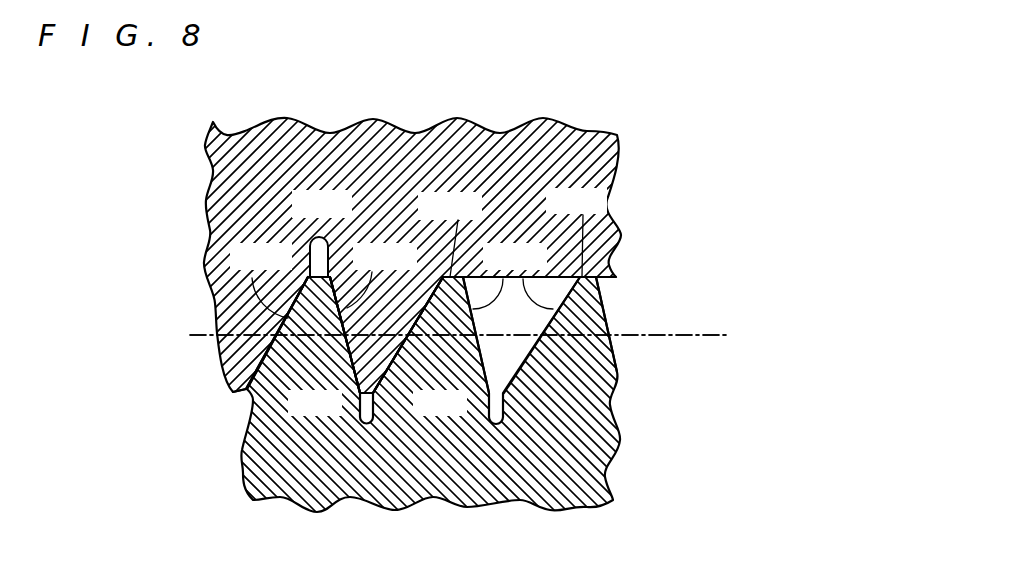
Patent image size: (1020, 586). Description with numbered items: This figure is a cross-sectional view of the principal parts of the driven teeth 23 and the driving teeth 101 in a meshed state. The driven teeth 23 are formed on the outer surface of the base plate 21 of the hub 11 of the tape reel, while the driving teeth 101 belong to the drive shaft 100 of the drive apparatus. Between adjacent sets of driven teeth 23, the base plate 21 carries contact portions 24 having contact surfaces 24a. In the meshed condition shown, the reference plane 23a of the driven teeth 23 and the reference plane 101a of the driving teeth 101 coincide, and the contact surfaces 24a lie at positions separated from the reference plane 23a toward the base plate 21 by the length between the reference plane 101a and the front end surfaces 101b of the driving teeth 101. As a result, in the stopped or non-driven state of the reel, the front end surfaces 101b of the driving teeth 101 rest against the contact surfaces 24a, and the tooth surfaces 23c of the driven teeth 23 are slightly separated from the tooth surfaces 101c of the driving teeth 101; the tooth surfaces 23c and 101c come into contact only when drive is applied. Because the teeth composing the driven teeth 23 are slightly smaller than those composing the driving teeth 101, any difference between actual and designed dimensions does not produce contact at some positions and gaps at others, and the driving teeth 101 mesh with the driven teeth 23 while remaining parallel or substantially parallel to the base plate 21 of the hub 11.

The hub 11 is at (657, 209).
The base plate 21 is at (614, 162).
The driven teeth 23 is at (217, 353).
The reference plane 23a is at (728, 335).
The tooth surfaces 23c is at (299, 360).
The contact portions 24 is at (552, 283).
The contact surfaces 24a is at (517, 280).
The drive shaft 100 is at (653, 423).
The driving teeth 101 is at (602, 293).
The reference plane 101a is at (728, 335).
The front end surfaces 101b is at (320, 236).
The tooth surfaces 101c is at (391, 280).